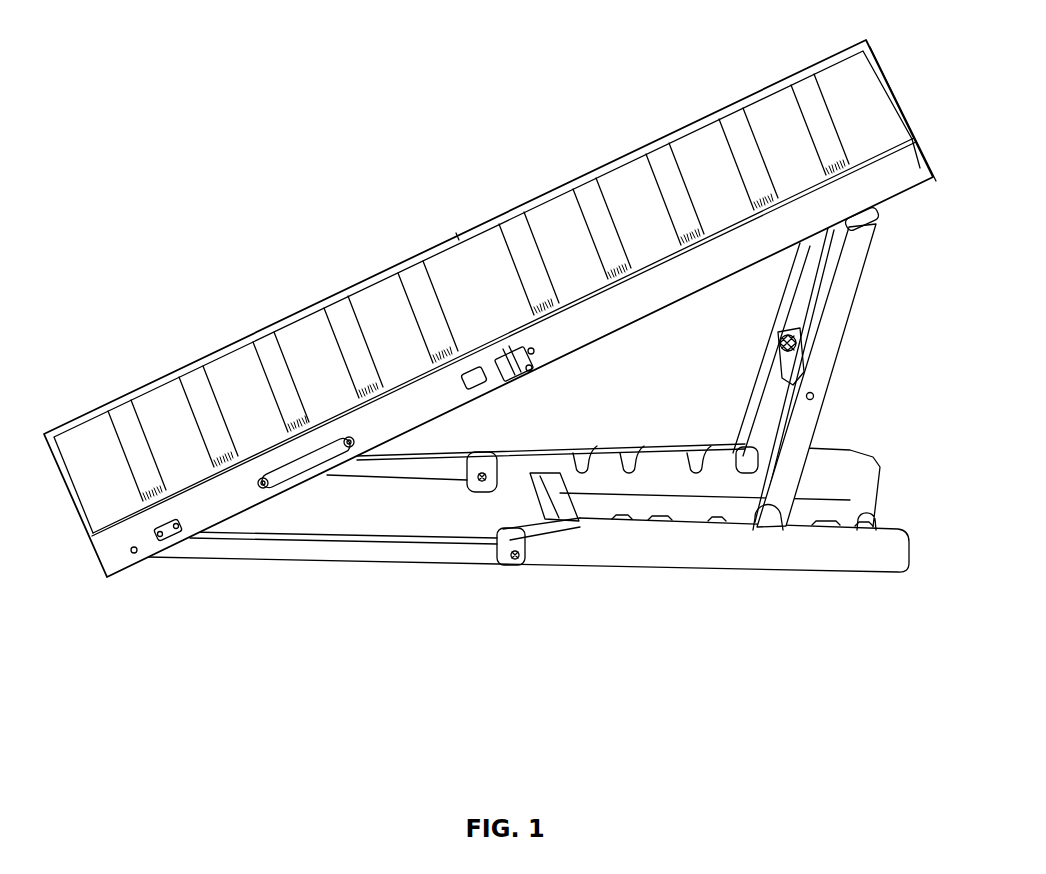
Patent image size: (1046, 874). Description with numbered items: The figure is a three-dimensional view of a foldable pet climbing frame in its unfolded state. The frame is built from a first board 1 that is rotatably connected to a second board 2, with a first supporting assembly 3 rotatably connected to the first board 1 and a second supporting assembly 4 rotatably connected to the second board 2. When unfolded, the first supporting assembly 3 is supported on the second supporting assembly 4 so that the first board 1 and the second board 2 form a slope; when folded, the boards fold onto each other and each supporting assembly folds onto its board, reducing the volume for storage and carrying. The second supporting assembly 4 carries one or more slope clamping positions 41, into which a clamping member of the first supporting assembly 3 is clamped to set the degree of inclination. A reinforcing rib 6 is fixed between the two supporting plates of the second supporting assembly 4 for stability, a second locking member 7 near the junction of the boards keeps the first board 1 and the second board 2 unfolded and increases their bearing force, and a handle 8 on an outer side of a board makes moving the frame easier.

The first board 1 is at (900, 177).
The second board 2 is at (222, 506).
The first supporting assembly 3 is at (853, 293).
The second supporting assembly 4 is at (360, 552).
The slope clamping positions 41 is at (707, 476).
The reinforcing rib 6 is at (553, 503).
The second locking member 7 is at (492, 393).
The handle 8 is at (305, 482).